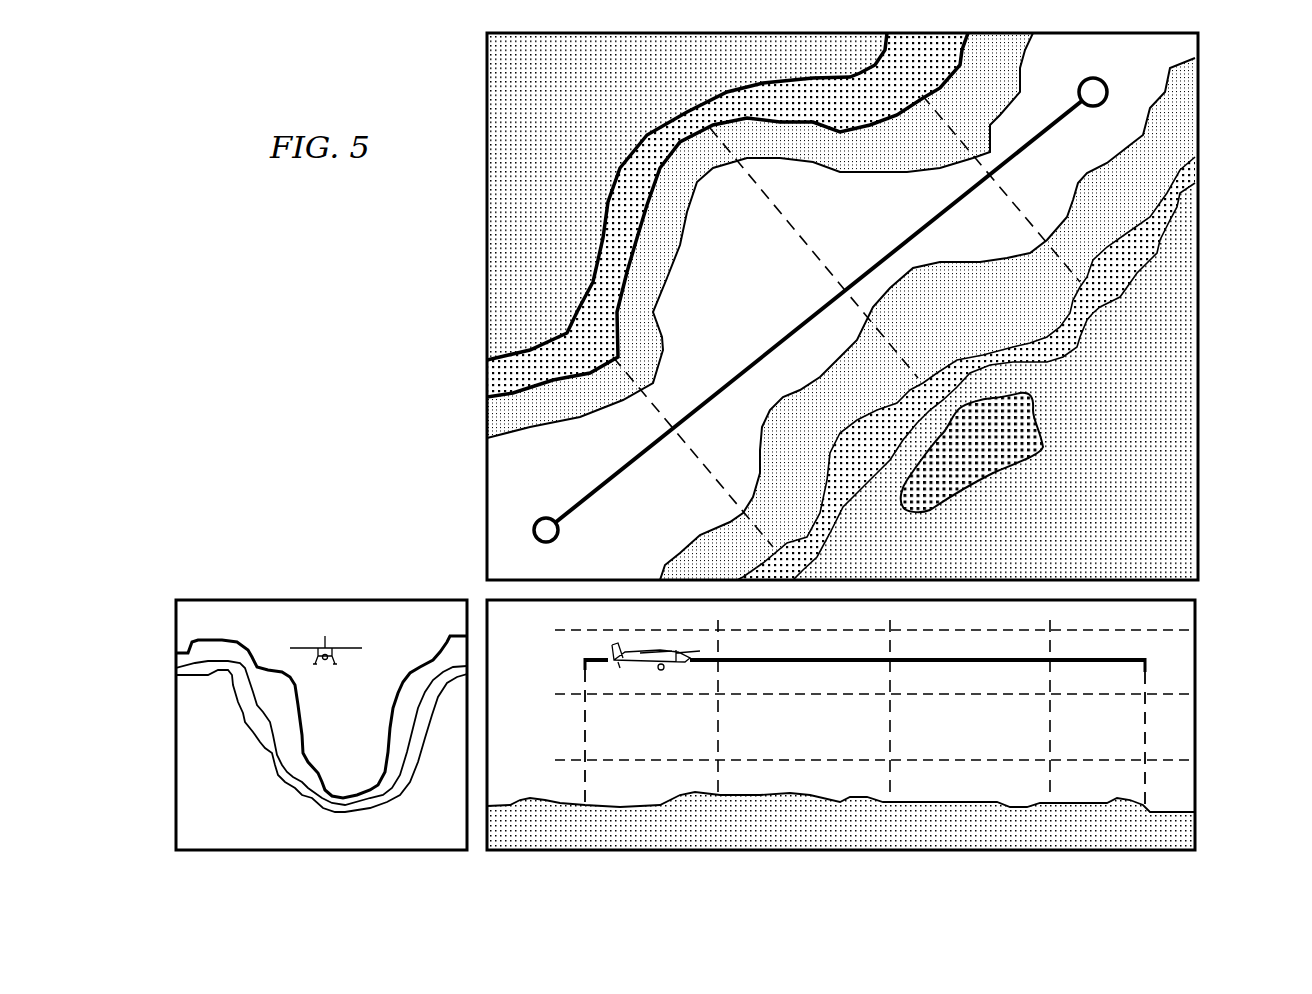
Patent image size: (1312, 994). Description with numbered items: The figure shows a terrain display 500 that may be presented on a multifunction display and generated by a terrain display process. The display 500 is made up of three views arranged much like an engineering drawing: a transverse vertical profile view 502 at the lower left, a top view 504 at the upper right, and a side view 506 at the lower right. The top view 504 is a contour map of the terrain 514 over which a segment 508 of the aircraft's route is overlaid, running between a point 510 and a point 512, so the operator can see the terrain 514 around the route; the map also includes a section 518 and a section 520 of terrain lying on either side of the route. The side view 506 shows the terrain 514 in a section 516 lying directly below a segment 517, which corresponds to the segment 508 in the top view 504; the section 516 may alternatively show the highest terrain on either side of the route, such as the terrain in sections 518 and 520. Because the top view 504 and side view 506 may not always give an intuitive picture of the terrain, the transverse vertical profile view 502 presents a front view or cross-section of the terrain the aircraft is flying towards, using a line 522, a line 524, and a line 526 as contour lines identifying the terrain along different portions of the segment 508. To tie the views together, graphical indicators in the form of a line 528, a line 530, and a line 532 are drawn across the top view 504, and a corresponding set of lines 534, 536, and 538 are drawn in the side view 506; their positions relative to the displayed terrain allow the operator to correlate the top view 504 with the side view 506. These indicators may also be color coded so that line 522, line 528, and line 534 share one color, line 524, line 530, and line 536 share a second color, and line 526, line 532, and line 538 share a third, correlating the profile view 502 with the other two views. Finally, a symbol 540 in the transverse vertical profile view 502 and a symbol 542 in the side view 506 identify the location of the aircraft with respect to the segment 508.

The display 500 is at (222, 222).
The transverse vertical profile view 502 is at (174, 745).
The top view 504 is at (1198, 283).
The side view 506 is at (1198, 740).
The segment 508 is at (760, 360).
The point 510 is at (541, 519).
The point 512 is at (1081, 82).
The terrain 514 is at (488, 239).
The section 516 is at (876, 838).
The segment 517 is at (802, 658).
The section 518 is at (1101, 531).
The section 520 is at (576, 126).
The line 522 is at (440, 653).
The line 524 is at (388, 758).
The line 526 is at (411, 752).
The line 528 is at (700, 462).
The line 530 is at (784, 220).
The line 532 is at (1013, 206).
The line 534 is at (719, 734).
The line 536 is at (891, 741).
The line 538 is at (1051, 741).
The symbol 540 is at (326, 666).
The symbol 542 is at (642, 664).